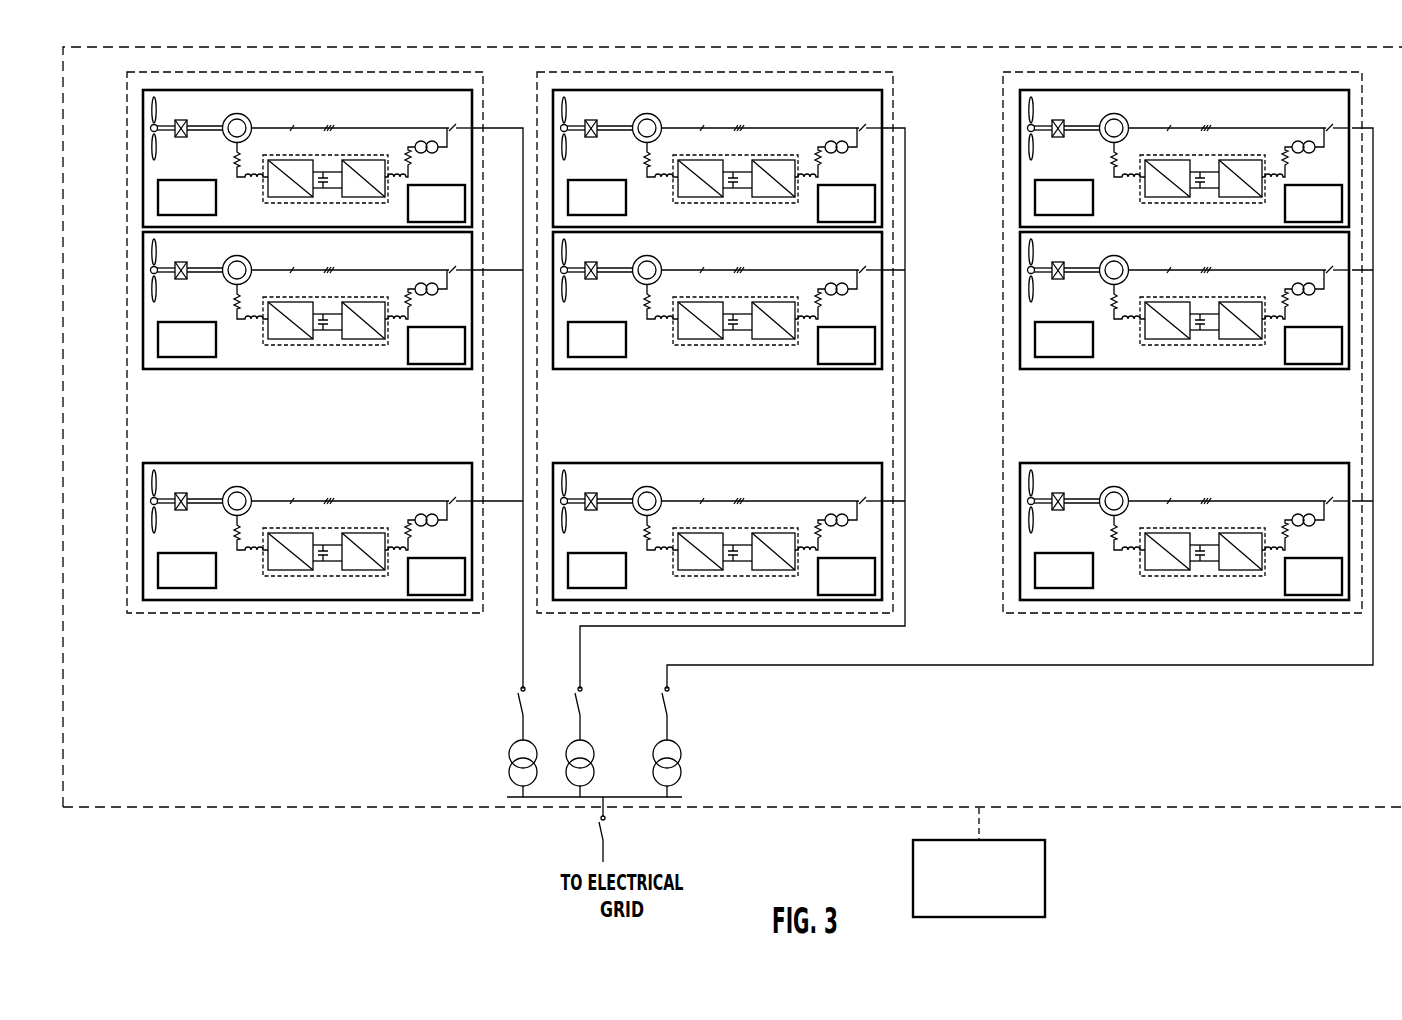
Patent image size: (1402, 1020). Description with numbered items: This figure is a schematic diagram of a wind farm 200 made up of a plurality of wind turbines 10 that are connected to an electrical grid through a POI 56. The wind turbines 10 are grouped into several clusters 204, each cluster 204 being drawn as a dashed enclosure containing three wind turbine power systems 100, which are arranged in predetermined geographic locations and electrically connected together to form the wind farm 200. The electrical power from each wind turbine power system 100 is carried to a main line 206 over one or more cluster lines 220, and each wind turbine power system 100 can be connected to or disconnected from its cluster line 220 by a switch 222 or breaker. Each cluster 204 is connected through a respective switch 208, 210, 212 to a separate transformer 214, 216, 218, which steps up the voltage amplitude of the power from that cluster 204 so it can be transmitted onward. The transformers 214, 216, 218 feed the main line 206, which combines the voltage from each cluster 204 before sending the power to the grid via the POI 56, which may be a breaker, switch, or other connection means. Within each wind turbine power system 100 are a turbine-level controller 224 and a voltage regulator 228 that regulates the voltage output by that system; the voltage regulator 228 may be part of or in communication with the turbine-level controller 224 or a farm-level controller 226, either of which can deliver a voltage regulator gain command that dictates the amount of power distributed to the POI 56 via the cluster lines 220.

The wind farm 200 is at (239, 45).
The cluster 204 is at (123, 260).
The wind turbine power system 100 is at (143, 192).
The wind turbine 10 is at (739, 333).
The cluster line 220 is at (498, 124).
The switch 222 is at (858, 300).
The turbine-level controller 224 is at (625, 386).
The voltage regulator 228 is at (875, 391).
The switch 208 is at (505, 696).
The switch 210 is at (571, 688).
The switch 212 is at (657, 698).
The transformer 214 is at (510, 755).
The transformer 216 is at (588, 743).
The transformer 218 is at (678, 747).
The main line 206 is at (548, 798).
The POI 56 is at (612, 830).
The farm-level controller 226 is at (979, 862).